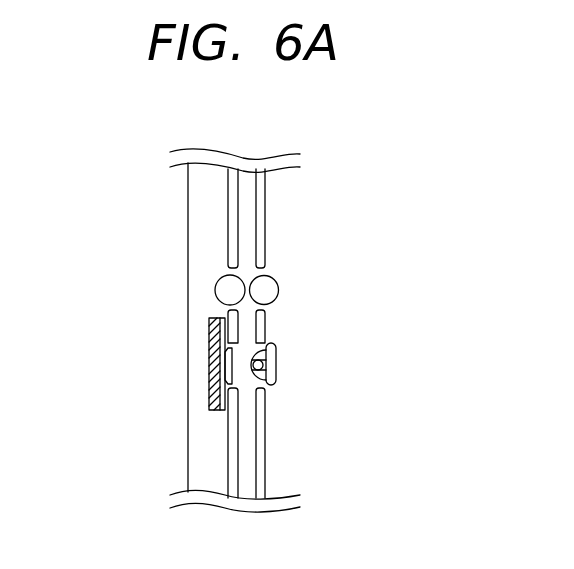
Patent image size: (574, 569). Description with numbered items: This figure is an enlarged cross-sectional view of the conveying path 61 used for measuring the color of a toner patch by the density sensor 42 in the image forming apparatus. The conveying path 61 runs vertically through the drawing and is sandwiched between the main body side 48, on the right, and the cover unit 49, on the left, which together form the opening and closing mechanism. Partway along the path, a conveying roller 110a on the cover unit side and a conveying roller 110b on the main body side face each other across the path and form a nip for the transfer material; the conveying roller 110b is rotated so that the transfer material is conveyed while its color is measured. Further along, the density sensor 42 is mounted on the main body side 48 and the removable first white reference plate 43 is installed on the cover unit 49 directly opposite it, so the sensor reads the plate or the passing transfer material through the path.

The conveying path 61 is at (248, 187).
The cover unit 49 is at (208, 200).
The main body side 48 is at (283, 200).
The conveying roller 110a is at (222, 290).
The conveying roller 110b is at (270, 289).
The first white reference plate 43 is at (212, 377).
The density sensor 42 is at (276, 366).